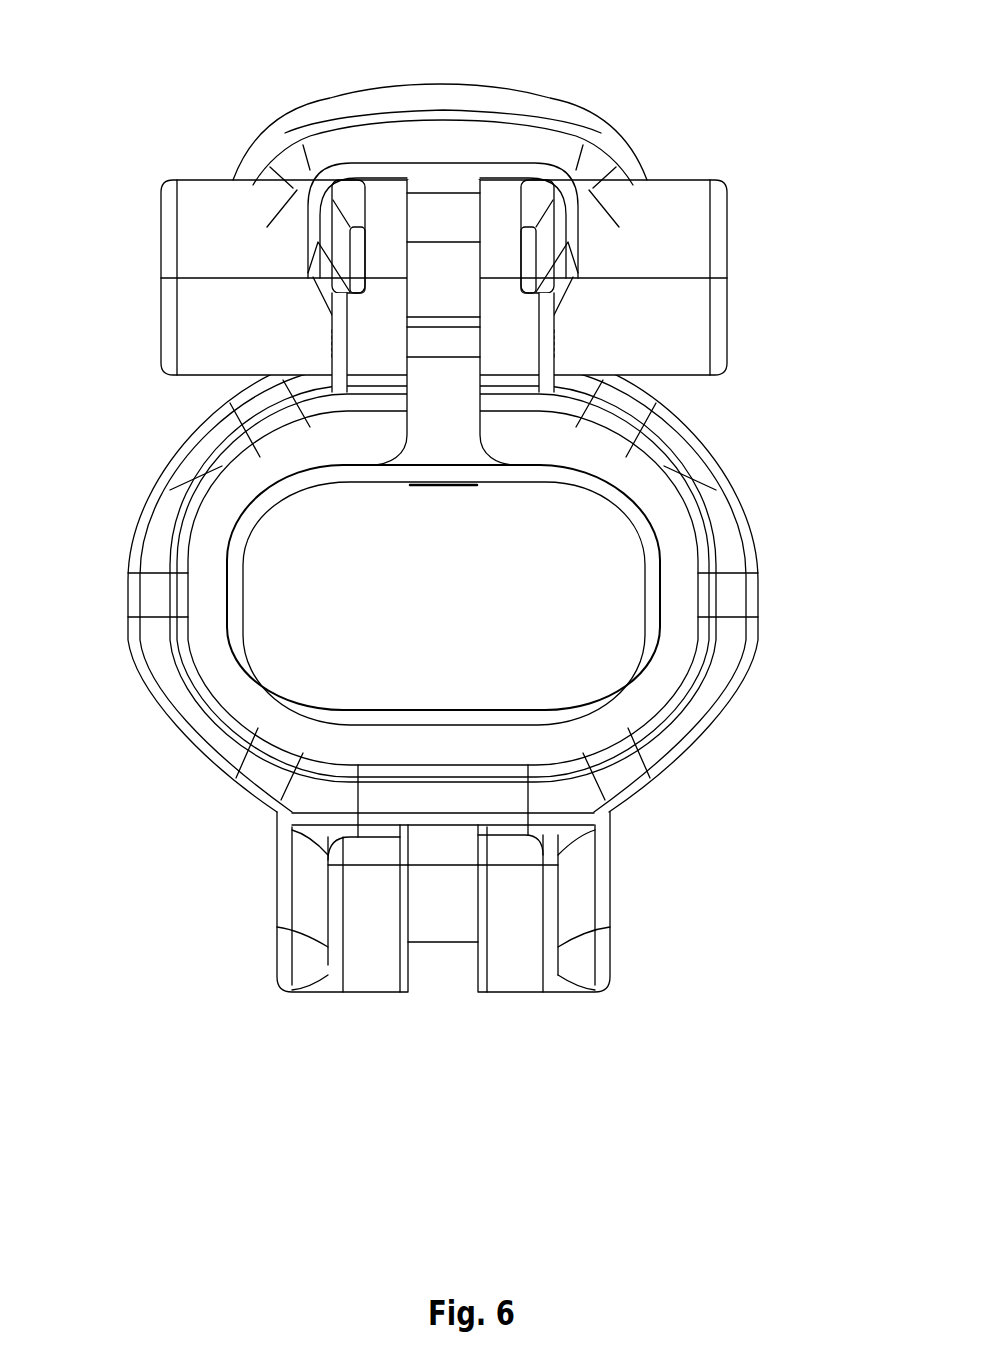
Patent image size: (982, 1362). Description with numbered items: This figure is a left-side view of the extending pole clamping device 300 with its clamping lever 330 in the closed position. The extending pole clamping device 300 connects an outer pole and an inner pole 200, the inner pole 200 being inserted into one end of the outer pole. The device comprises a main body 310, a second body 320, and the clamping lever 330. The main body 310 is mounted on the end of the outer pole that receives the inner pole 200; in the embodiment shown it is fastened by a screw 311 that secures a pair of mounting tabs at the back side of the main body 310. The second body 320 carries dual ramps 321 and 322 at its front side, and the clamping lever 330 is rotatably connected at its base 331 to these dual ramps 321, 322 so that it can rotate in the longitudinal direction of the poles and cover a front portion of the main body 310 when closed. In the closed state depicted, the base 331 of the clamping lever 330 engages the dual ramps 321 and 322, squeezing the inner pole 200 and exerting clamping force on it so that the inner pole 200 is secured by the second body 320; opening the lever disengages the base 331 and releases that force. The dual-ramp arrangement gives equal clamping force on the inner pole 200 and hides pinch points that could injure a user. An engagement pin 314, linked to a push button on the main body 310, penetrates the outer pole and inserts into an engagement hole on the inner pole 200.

The extending pole clamping device 300 is at (462, 524).
The main body 310 is at (556, 883).
The screw 311 is at (433, 918).
The engagement pin 314 is at (437, 487).
The second body 320 is at (214, 657).
The ramp 321 is at (660, 443).
The ramp 322 is at (262, 432).
The clamping lever 330 is at (498, 106).
The base 331 is at (665, 205).
The inner pole 200 is at (650, 625).